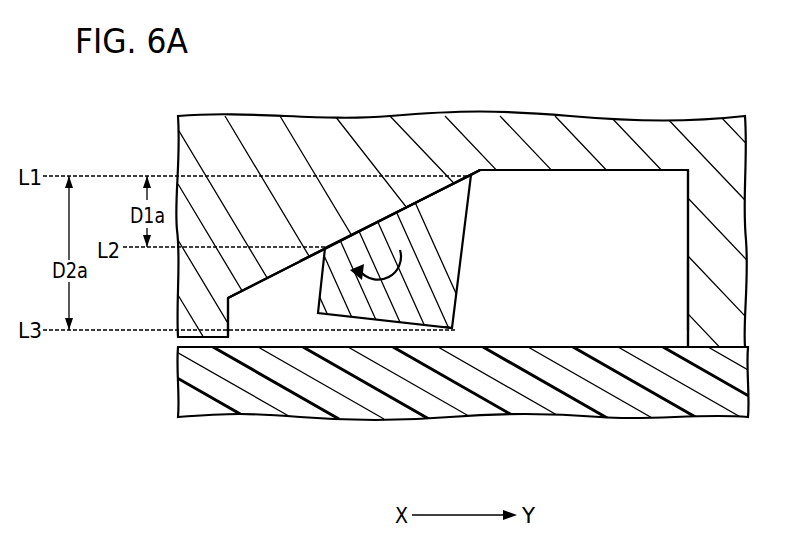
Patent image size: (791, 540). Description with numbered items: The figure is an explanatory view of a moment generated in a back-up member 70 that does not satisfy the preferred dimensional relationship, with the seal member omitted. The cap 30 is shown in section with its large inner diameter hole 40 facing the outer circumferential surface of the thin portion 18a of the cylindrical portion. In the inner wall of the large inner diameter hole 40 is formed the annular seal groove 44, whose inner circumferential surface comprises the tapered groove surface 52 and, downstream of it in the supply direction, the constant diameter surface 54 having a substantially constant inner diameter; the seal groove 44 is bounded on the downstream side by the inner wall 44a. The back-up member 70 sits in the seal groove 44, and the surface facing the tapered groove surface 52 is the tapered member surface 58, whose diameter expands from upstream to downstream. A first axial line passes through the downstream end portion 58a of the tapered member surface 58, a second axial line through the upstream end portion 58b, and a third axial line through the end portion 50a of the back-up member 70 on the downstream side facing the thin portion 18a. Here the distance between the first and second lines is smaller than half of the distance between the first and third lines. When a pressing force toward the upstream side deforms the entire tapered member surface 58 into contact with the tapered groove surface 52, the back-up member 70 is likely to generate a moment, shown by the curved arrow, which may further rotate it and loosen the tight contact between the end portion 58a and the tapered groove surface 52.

The cap 30 is at (703, 130).
The thin portion 18a is at (622, 402).
The back-up member 70 is at (383, 308).
The tapered member surface 58 is at (398, 212).
The end portion of the tapered member surface on the downstream side 58a is at (481, 177).
The end portion of the tapered member surface on the upstream side 58b is at (325, 248).
The constant diameter surface 54 is at (504, 171).
The seal groove 44 is at (667, 171).
The inner wall of the seal groove 44a is at (687, 294).
The end portion of the back-up member on the downstream side 50a is at (457, 335).
The tapered groove surface 52 is at (243, 292).
The large inner diameter hole 40 is at (208, 338).